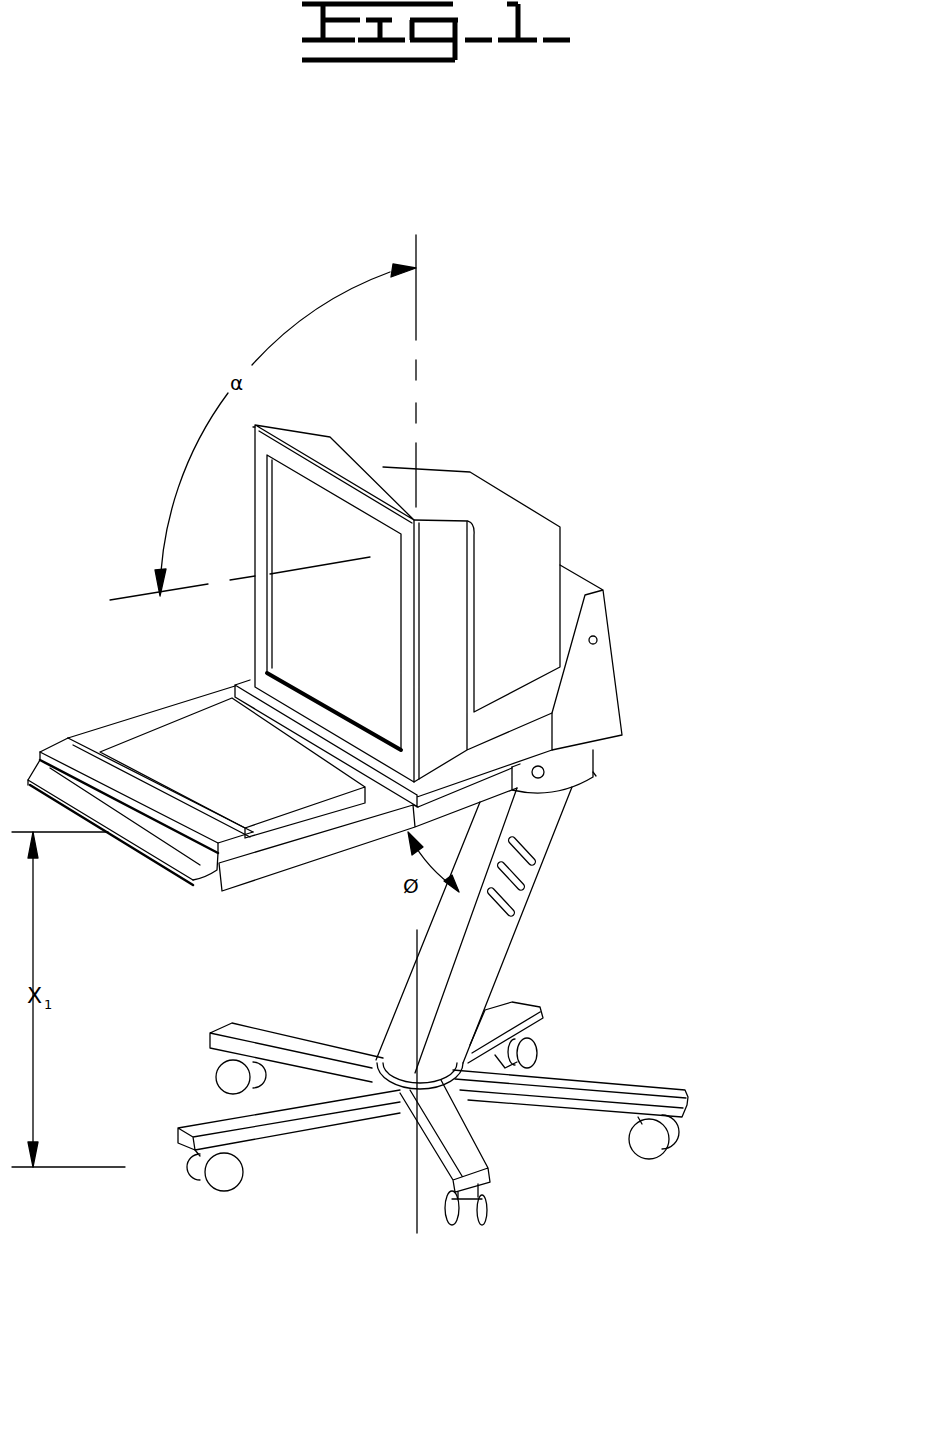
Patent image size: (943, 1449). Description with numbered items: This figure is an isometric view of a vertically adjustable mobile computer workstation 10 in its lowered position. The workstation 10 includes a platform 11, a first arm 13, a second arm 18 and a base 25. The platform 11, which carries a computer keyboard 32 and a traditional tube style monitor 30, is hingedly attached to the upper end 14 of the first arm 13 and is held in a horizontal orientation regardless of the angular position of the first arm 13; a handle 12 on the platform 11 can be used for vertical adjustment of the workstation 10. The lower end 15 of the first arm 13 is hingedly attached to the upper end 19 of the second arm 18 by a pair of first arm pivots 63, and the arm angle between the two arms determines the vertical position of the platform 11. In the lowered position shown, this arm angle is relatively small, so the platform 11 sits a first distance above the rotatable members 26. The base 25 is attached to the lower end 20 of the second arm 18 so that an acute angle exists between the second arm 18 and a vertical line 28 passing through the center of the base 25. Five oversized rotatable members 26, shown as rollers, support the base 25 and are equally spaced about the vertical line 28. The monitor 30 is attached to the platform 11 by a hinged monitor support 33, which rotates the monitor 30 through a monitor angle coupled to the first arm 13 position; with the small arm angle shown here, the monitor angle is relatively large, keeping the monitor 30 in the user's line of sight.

The computer workstation 10 is at (658, 528).
The platform 11 is at (325, 862).
The handle 12 is at (163, 863).
The first arm 13 is at (490, 792).
The upper end of first arm 14 is at (418, 807).
The lower end of first arm 15 is at (508, 780).
The second arm 18 is at (533, 892).
The upper end of second arm 19 is at (575, 794).
The lower end of second arm 20 is at (533, 1010).
The base 25 is at (520, 1035).
The rotatable members 26 is at (537, 1062).
The vertical line 28 is at (392, 1240).
The tube style monitor 30 is at (475, 462).
The computer keyboard 32 is at (193, 743).
The hinged monitor support 33 is at (590, 668).
The first arm pivots 63 is at (597, 775).